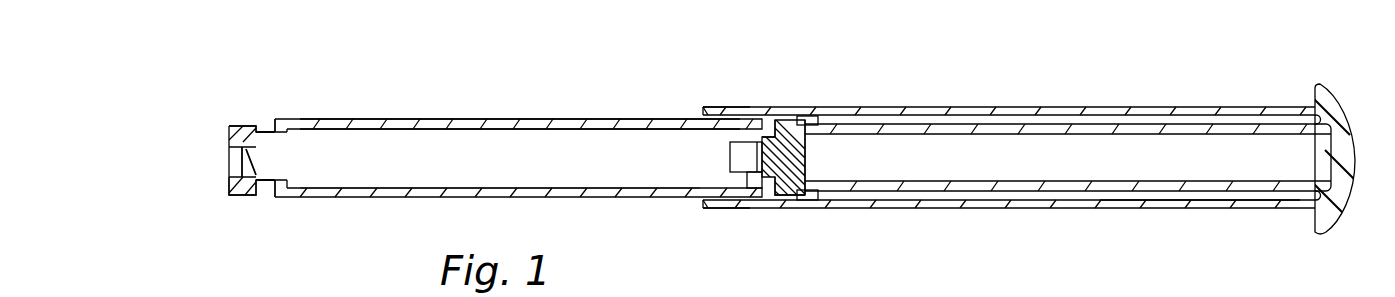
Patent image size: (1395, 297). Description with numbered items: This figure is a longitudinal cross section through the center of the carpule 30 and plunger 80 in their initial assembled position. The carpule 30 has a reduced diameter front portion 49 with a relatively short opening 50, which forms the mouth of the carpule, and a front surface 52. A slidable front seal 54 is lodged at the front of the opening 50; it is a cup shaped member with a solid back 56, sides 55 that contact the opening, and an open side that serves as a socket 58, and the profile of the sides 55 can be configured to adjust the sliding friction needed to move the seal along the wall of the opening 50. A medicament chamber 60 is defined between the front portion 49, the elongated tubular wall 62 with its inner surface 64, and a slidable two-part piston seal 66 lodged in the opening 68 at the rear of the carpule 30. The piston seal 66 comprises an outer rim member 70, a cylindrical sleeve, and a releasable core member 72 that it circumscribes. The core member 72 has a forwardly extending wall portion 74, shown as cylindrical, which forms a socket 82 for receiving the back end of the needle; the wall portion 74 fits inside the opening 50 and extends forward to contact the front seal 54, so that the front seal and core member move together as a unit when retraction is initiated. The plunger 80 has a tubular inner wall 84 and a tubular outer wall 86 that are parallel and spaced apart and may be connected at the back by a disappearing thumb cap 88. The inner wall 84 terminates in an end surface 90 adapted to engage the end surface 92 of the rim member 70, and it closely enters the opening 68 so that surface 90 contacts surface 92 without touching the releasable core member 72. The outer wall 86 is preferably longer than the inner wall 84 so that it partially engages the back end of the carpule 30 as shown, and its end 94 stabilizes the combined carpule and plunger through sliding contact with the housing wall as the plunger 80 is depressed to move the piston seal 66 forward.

The carpule 30 is at (592, 118).
The reduced diameter front portion 49 is at (268, 98).
The opening 50 is at (278, 145).
The front surface 52 is at (223, 189).
The front seal 54 is at (245, 138).
The sides 55 is at (250, 180).
The solid back 56 is at (257, 163).
The socket 58 is at (228, 162).
The medicament chamber 60 is at (558, 162).
The elongated tubular wall 62 is at (492, 118).
The inner surface 64 is at (433, 128).
The slidable piston seal 66 is at (797, 117).
The opening 68 is at (813, 183).
The rim member 70 is at (770, 137).
The releasable core member 72 is at (777, 152).
The forwardly extending wall portion 74 is at (747, 178).
The plunger 80 is at (1150, 108).
The socket 82 is at (731, 157).
The inner wall 84 is at (1215, 184).
The outer wall 86 is at (1167, 210).
The disappearing thumb cap 88 is at (1345, 112).
The end surface 90 is at (797, 191).
The end surface 92 is at (805, 140).
The end 94 is at (703, 110).